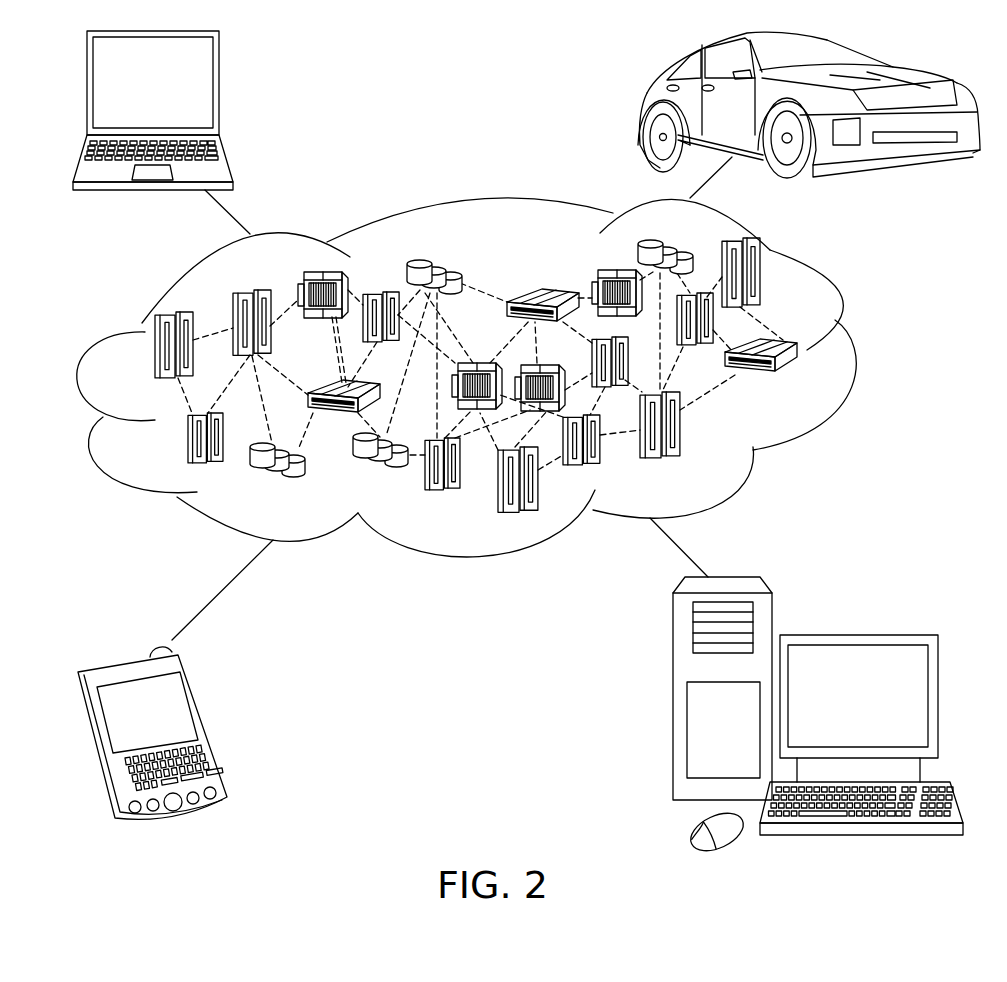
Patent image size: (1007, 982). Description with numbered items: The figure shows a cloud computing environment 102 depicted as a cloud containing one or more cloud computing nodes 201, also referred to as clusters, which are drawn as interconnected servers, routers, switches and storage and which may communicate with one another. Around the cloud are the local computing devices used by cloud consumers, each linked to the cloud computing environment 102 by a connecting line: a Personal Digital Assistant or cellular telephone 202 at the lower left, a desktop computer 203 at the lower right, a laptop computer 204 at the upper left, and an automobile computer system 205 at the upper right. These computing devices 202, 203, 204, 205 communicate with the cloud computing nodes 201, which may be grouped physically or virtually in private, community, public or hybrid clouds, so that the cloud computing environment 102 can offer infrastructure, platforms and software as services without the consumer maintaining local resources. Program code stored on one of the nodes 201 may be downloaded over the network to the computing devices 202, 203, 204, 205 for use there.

The cloud computing environment 102 is at (858, 356).
The cloud computing nodes 201 is at (810, 388).
The Personal Digital Assistant (PDA) or cellular telephone 202 is at (212, 728).
The desktop computer 203 is at (855, 634).
The laptop computer 204 is at (219, 90).
The automobile computer system 205 is at (643, 105).